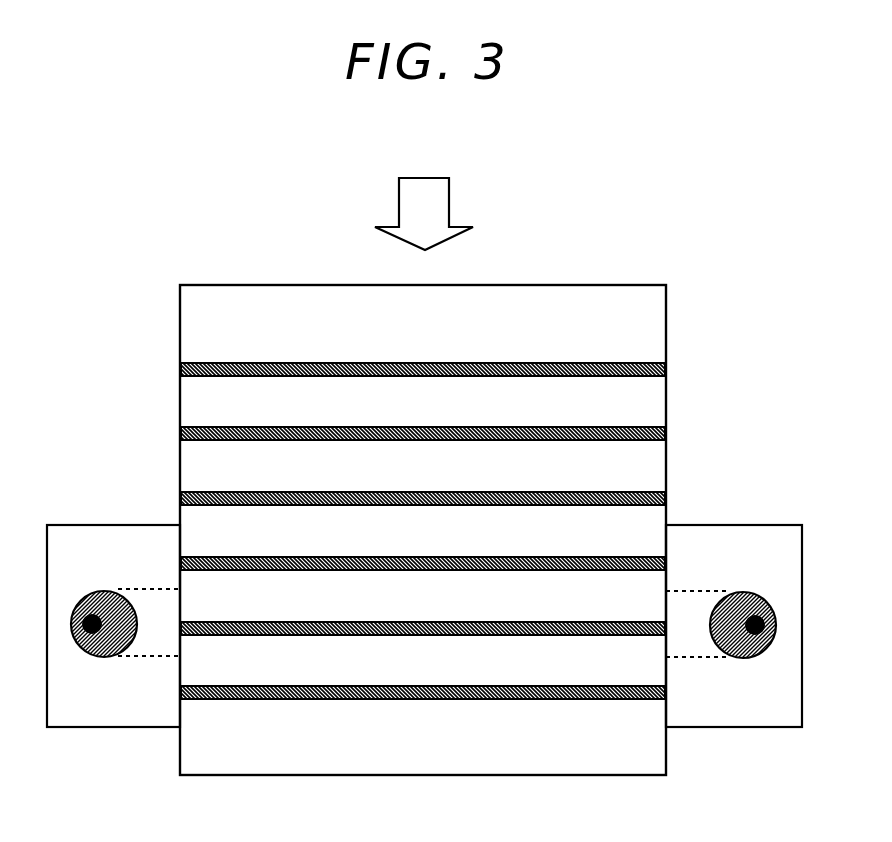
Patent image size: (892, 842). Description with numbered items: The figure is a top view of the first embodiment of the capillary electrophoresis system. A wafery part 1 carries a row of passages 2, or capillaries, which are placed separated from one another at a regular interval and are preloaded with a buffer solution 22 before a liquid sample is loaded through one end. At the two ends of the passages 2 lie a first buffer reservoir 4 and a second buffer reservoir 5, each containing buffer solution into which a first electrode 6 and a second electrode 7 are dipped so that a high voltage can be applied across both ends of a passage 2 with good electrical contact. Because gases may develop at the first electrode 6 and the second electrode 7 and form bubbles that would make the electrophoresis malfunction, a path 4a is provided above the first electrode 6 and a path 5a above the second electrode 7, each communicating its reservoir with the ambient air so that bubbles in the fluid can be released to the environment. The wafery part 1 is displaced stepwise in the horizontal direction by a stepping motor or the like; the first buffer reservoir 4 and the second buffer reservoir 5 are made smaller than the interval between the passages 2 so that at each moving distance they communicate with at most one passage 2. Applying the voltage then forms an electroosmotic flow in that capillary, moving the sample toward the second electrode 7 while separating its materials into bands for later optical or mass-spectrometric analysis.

The wafery part 1 is at (602, 303).
The passage 2 is at (548, 622).
The buffer solution 22 is at (632, 428).
The first buffer reservoir 4 is at (153, 605).
The path 4a is at (100, 598).
The first electrode 6 is at (90, 656).
The second buffer reservoir 5 is at (697, 635).
The path 5a is at (752, 596).
The second electrode 7 is at (752, 660).